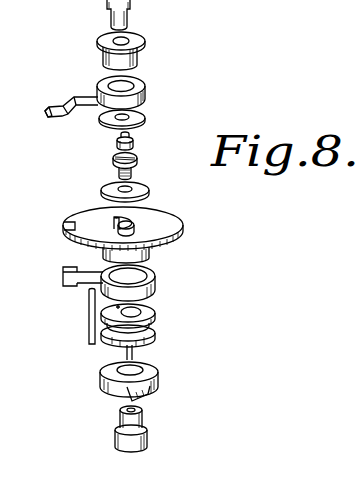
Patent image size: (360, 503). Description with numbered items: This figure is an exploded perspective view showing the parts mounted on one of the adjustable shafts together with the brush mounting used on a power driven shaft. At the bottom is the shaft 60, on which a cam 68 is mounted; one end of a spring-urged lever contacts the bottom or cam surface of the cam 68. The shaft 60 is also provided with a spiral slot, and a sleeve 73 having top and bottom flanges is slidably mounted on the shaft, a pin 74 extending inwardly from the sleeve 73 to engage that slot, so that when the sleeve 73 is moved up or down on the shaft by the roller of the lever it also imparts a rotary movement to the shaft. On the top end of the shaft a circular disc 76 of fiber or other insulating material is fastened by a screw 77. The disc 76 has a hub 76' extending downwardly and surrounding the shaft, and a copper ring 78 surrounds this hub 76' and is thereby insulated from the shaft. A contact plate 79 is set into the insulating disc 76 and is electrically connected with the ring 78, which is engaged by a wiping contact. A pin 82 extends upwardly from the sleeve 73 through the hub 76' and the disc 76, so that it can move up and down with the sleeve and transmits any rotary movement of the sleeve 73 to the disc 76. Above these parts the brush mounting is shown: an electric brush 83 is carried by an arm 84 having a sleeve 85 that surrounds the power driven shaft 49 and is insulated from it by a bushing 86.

The power driven shaft 49 is at (109, 1).
The bushing 86 is at (151, 52).
The sleeve 85 is at (153, 90).
The arm 84 is at (82, 96).
The electric brush 83 is at (56, 114).
The screw 77 is at (139, 160).
The circular disc 76 is at (145, 226).
The hub 76' is at (147, 255).
The copper ring 78 is at (166, 284).
The contact plate 79 is at (69, 268).
The pin 82 is at (83, 312).
The sleeve 73 is at (164, 323).
The pin 74 is at (141, 357).
The cam 68 is at (94, 383).
The shaft 60 is at (156, 439).